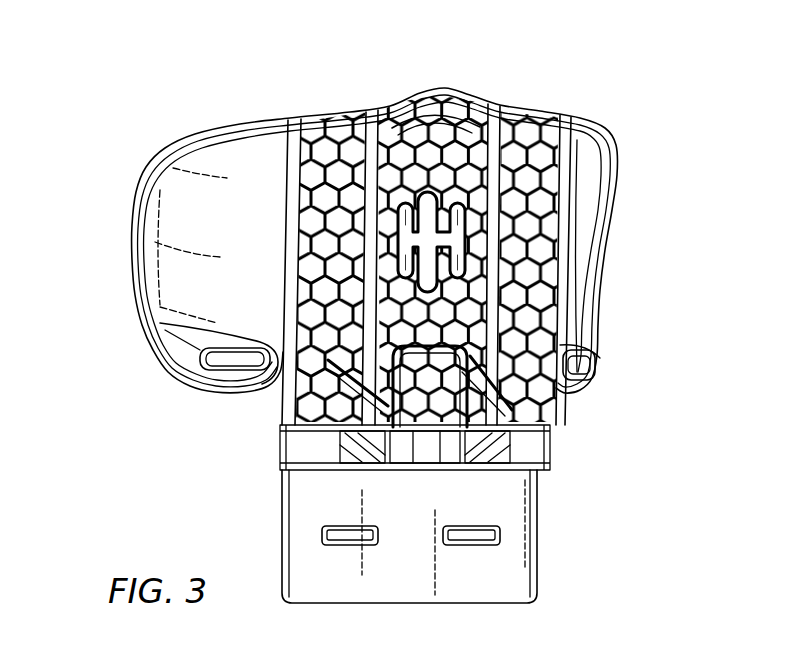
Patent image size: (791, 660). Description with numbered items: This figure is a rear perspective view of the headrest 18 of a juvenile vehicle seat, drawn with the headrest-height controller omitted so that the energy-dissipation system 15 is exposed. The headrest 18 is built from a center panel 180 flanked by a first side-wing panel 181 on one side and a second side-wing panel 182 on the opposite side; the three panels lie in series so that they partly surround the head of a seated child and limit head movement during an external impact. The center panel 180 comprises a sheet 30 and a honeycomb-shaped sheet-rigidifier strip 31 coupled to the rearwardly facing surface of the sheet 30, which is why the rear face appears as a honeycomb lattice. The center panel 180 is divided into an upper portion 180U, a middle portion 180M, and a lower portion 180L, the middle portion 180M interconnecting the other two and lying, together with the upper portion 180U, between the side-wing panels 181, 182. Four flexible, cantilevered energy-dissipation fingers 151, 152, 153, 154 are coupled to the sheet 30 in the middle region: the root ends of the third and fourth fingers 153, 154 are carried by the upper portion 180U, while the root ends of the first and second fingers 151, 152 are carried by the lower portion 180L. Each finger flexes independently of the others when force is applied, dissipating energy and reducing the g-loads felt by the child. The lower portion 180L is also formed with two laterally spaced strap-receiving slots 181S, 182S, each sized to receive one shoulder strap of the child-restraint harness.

The energy-dissipation system 15 is at (400, 165).
The headrest 18 is at (503, 85).
The sheet 30 is at (330, 116).
The honeycomb-shaped sheet-rigidifier strip 31 is at (308, 162).
The first energy-dissipation finger 151 is at (405, 262).
The second energy-dissipation finger 152 is at (455, 265).
The third energy-dissipation finger 153 is at (460, 213).
The fourth energy-dissipation finger 154 is at (398, 207).
The center panel 180 is at (531, 98).
The upper portion 180U is at (275, 139).
The middle portion 180M is at (268, 242).
The lower portion 180L is at (258, 338).
The first side-wing panel 181 is at (128, 170).
The second side-wing panel 182 is at (625, 160).
The strap-receiving slot 181S is at (348, 427).
The strap-receiving slot 182S is at (492, 429).